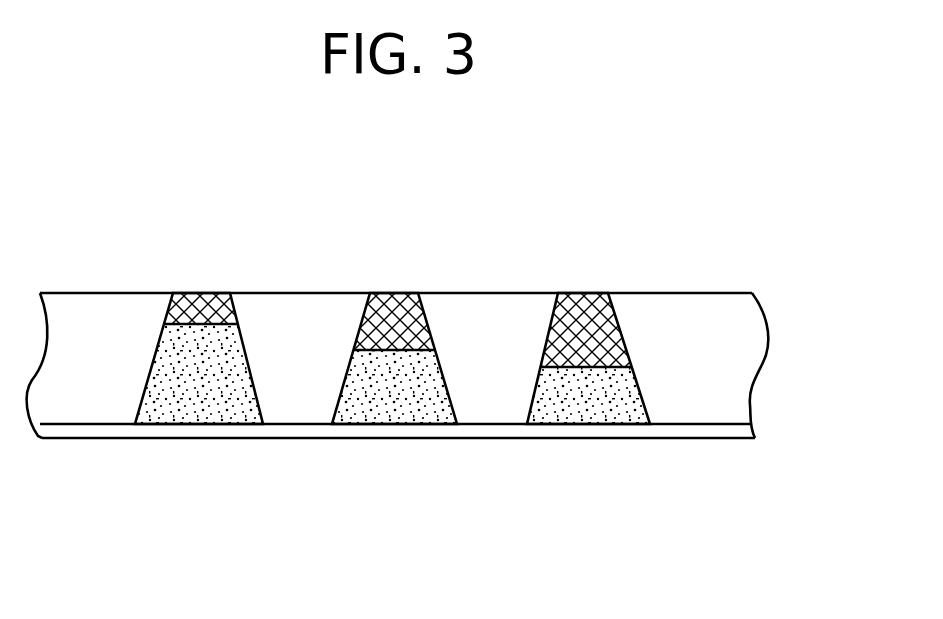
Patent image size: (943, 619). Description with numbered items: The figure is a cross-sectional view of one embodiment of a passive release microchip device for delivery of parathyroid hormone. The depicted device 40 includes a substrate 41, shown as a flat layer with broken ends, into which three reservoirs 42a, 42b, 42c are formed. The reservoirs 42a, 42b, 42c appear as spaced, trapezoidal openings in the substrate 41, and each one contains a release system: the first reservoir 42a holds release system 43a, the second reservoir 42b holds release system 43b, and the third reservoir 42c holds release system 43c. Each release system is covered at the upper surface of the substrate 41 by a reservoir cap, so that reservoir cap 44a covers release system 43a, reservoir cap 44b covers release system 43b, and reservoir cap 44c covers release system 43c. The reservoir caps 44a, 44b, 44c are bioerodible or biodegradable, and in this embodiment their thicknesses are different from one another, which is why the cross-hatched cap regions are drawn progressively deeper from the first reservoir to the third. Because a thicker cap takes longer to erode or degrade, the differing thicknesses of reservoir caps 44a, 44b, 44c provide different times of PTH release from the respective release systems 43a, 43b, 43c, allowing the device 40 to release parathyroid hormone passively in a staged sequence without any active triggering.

The device 40 is at (704, 254).
The substrate 41 is at (738, 380).
The reservoir 42a is at (207, 397).
The reservoir 42b is at (400, 400).
The reservoir 42c is at (585, 400).
The release system 43a is at (167, 417).
The release system 43b is at (363, 420).
The release system 43c is at (547, 418).
The reservoir cap 44a is at (203, 302).
The reservoir cap 44b is at (398, 302).
The reservoir cap 44c is at (590, 300).